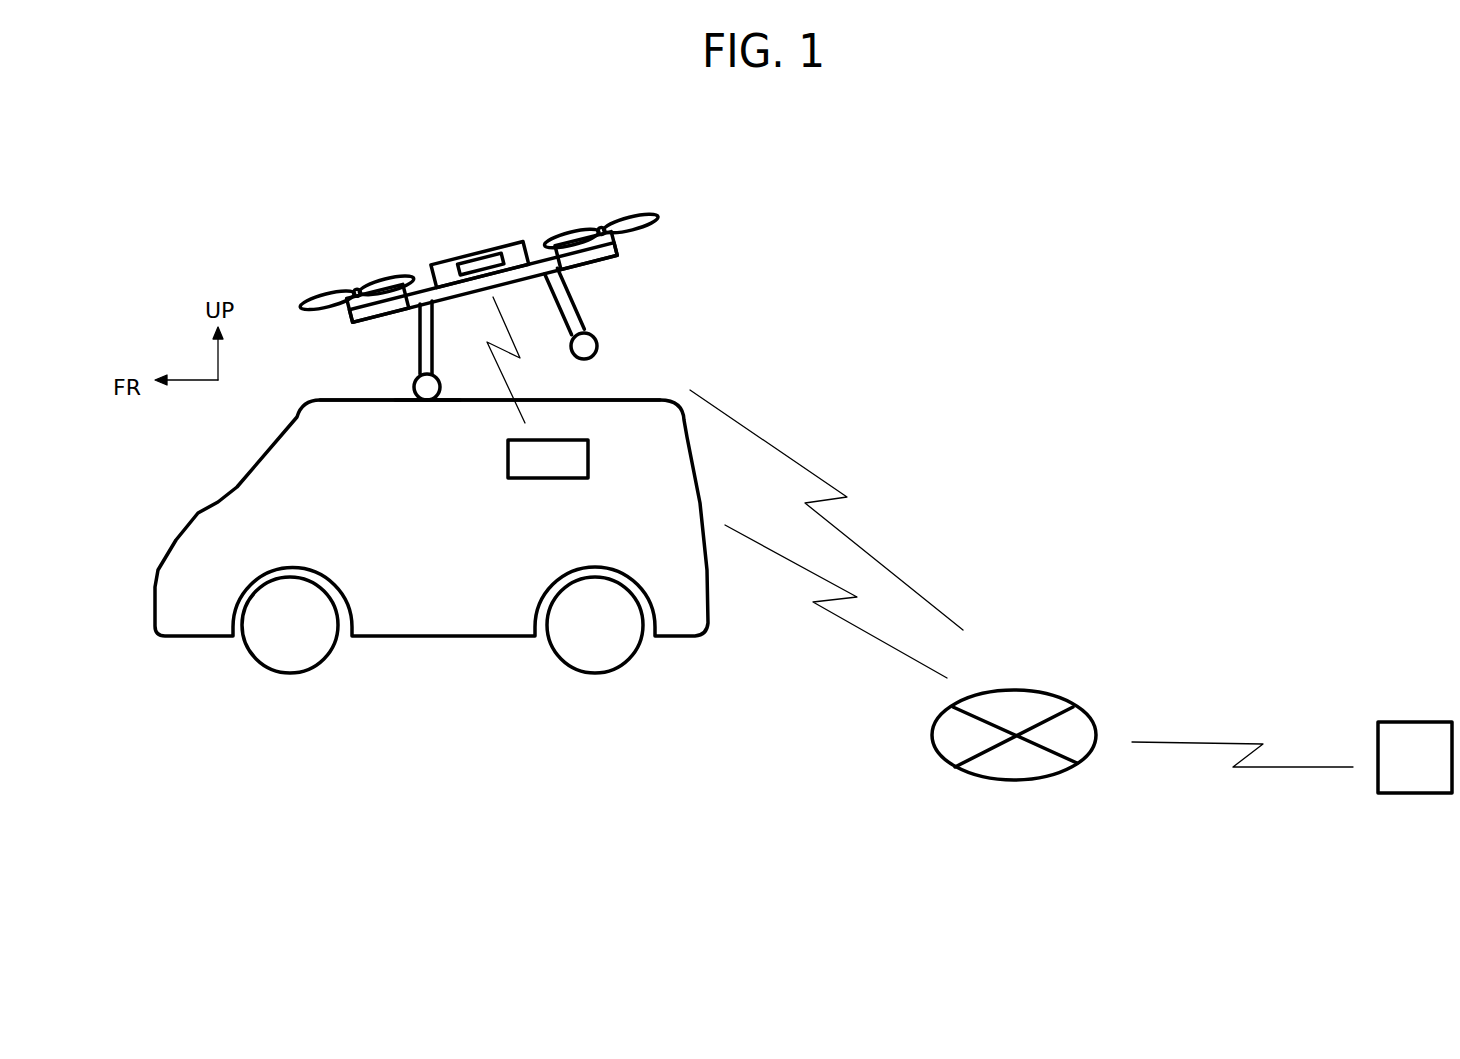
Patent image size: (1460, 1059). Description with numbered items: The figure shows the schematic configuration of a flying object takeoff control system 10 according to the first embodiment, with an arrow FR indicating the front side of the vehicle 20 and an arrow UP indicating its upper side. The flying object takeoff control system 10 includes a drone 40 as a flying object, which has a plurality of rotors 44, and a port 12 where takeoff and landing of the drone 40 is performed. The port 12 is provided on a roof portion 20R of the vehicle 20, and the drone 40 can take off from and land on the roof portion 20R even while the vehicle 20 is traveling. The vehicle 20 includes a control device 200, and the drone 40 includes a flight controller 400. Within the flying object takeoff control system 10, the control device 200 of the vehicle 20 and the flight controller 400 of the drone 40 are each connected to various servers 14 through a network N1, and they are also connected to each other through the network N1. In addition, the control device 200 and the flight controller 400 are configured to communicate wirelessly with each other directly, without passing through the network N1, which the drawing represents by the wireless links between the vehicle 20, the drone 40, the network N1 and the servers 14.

The flying object takeoff control system 10 is at (973, 210).
The port 12 is at (398, 390).
The servers 14 is at (1415, 720).
The vehicle 20 is at (203, 472).
The roof portion 20R is at (347, 397).
The drone 40 is at (507, 227).
The rotors 44 is at (323, 293).
The control device 200 is at (545, 480).
The flight controller 400 is at (477, 258).
The network N1 is at (1007, 688).